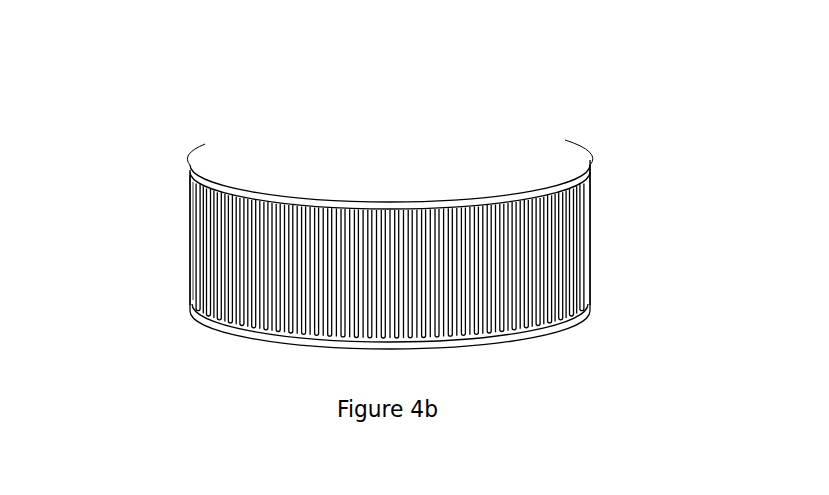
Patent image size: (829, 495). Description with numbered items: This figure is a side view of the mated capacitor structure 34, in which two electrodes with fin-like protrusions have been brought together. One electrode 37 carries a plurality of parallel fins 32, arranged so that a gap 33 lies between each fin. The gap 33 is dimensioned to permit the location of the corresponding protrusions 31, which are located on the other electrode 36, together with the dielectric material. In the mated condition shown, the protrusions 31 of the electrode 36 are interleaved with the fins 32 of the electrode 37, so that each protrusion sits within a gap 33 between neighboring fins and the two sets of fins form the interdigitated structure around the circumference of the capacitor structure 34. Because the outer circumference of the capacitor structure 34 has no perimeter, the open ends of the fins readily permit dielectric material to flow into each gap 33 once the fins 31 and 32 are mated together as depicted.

The protrusions 31 is at (195, 213).
The parallel fins 32 is at (237, 317).
The gap 33 is at (485, 328).
The capacitor structure 34 is at (625, 135).
The electrode 36 is at (225, 163).
The electrode 37 is at (575, 322).